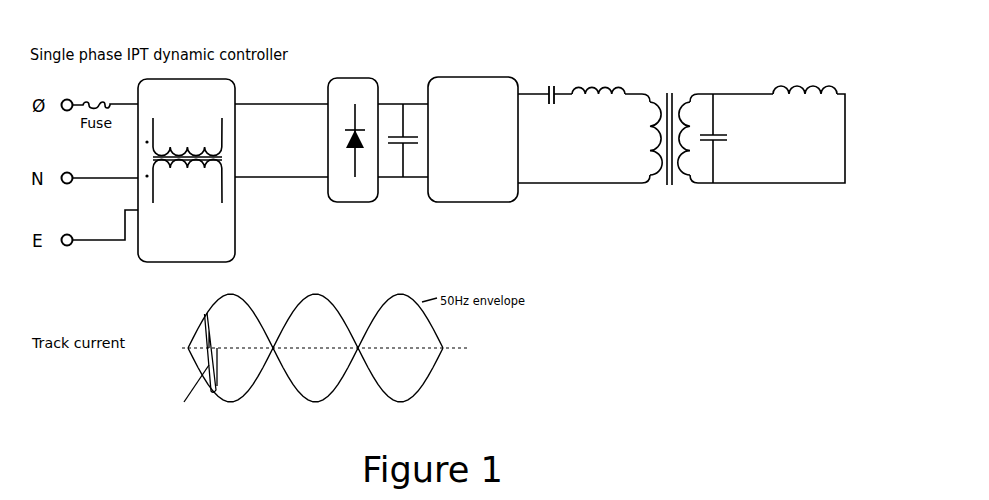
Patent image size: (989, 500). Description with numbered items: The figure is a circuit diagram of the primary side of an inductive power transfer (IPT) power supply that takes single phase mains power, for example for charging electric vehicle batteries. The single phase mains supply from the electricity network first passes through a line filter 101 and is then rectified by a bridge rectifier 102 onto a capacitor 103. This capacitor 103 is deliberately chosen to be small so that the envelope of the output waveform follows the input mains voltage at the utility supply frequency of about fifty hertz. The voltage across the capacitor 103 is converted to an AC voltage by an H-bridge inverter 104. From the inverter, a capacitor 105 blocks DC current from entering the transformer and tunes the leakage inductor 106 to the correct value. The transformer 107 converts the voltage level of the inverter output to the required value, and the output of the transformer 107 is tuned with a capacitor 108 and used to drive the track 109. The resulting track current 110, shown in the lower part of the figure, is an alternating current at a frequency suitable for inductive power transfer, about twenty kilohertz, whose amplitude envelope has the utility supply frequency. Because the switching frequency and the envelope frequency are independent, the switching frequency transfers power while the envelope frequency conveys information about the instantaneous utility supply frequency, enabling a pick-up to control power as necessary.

The line filter 101 is at (186, 179).
The bridge rectifier 102 is at (353, 150).
The capacitor 103 is at (403, 150).
The H-bridge inverter 104 is at (473, 149).
The capacitor 105 is at (551, 87).
The leakage inductor 106 is at (598, 82).
The transformer 107 is at (670, 129).
The capacitor 108 is at (719, 138).
The track 109 is at (805, 81).
The track current 110 is at (221, 368).